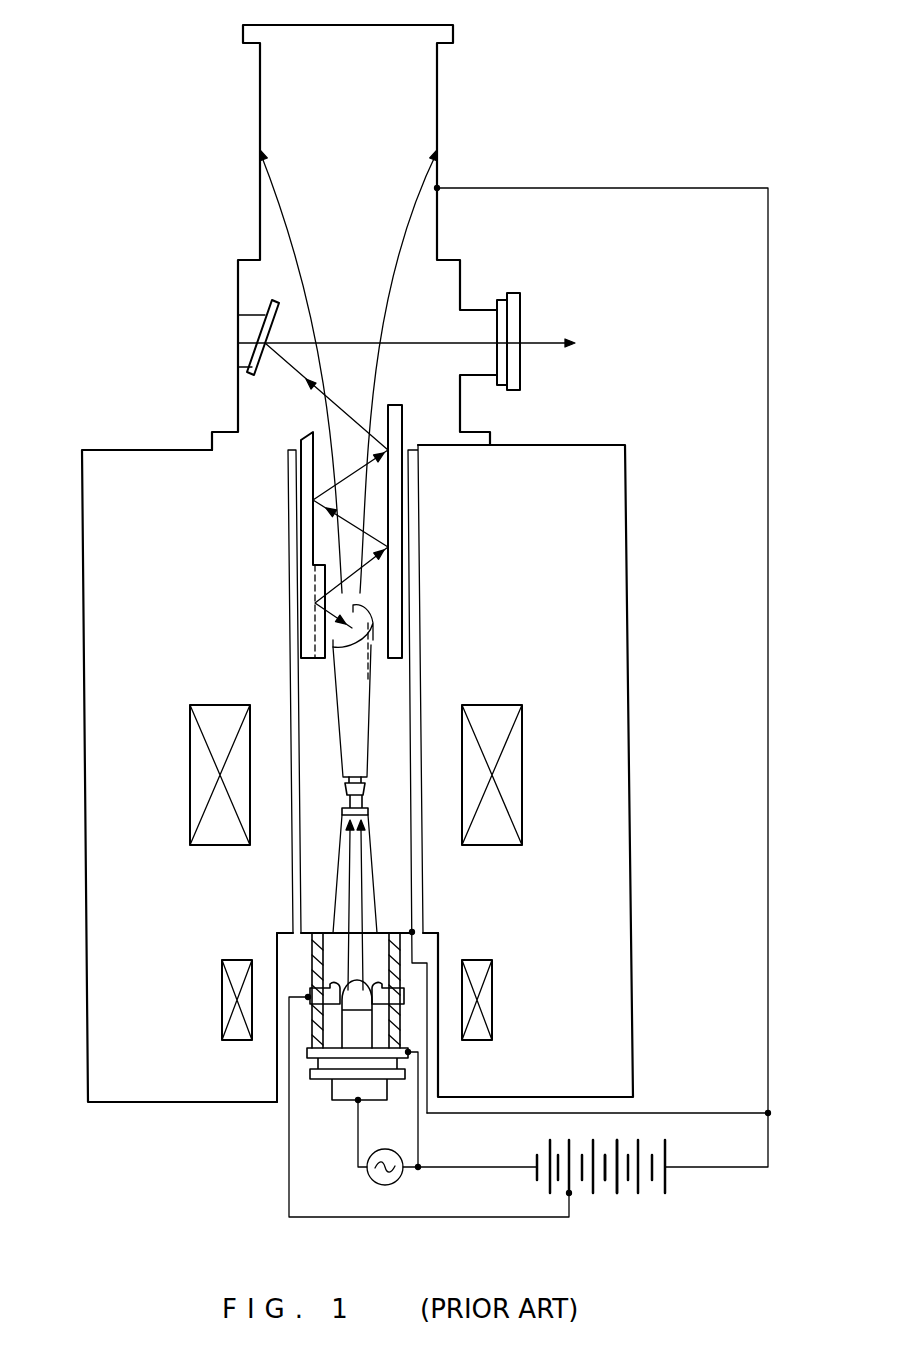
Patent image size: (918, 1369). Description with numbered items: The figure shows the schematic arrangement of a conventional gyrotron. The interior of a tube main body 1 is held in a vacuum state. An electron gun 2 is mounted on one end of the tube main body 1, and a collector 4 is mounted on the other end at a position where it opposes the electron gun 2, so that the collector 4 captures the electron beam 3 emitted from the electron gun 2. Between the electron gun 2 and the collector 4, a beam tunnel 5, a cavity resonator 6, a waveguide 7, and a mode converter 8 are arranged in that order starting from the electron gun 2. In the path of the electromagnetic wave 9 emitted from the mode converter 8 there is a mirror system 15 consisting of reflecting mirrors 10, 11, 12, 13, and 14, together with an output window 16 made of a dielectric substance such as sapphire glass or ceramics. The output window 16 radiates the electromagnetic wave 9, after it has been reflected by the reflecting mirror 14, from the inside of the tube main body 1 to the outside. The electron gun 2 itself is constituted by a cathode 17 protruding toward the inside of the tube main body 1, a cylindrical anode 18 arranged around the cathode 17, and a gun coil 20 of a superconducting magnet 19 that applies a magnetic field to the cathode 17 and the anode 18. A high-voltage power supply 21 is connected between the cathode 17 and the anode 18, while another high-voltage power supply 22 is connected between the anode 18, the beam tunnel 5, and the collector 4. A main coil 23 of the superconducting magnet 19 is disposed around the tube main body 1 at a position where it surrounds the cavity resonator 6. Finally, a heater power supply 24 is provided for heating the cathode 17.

The tube main body 1 is at (218, 262).
The electron gun 2 is at (275, 1128).
The electron beam 3 is at (290, 230).
The collector 4 is at (437, 120).
The beam tunnel 5 is at (342, 852).
The cavity resonator 6 is at (366, 790).
The waveguide 7 is at (341, 714).
The mode converter 8 is at (374, 680).
The electromagnetic wave 9 is at (318, 395).
The reflecting mirror 10 is at (312, 598).
The reflecting mirror 11 is at (390, 547).
The reflecting mirror 12 is at (300, 480).
The reflecting mirror 13 is at (398, 442).
The reflecting mirror 14 is at (252, 343).
The mirror system 15 is at (215, 506).
The output window 16 is at (518, 322).
The cathode 17 is at (360, 985).
The cylindrical anode 18 is at (390, 997).
The superconducting magnet 19 is at (630, 548).
The gun coil 20 is at (222, 1012).
The high-voltage power supply 21 is at (606, 1192).
The high-voltage power supply 22 is at (538, 1148).
The main coil 23 is at (193, 783).
The heater power supply 24 is at (368, 1177).